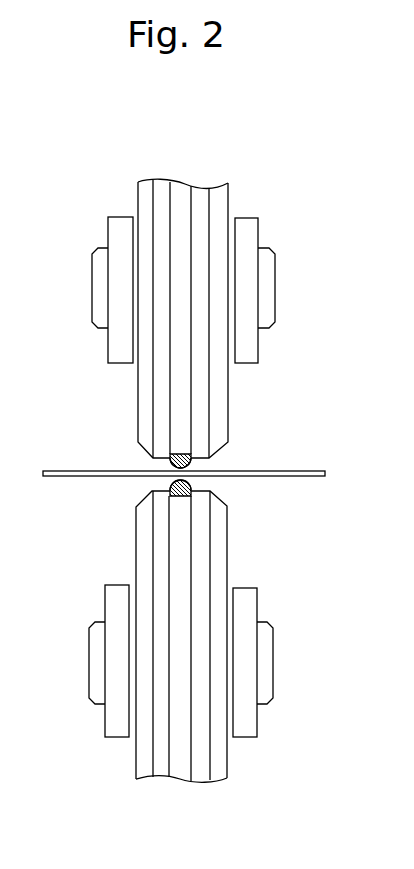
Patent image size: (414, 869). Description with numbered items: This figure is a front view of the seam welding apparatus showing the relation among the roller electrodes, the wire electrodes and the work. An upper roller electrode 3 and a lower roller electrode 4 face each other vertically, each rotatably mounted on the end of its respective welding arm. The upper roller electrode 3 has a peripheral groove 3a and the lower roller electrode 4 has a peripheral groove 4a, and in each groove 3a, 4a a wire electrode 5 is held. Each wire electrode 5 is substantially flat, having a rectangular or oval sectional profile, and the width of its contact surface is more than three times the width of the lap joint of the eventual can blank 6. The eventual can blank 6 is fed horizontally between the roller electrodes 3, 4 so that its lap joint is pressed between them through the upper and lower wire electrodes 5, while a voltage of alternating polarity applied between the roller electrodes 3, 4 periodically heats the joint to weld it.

The upper roller electrode 3 is at (184, 363).
The peripheral groove of upper roller electrode 3a is at (187, 452).
The lower roller electrode 4 is at (182, 713).
The peripheral groove of lower roller electrode 4a is at (190, 497).
The wire electrode 5 is at (170, 468).
The eventual can blank 6 is at (257, 469).